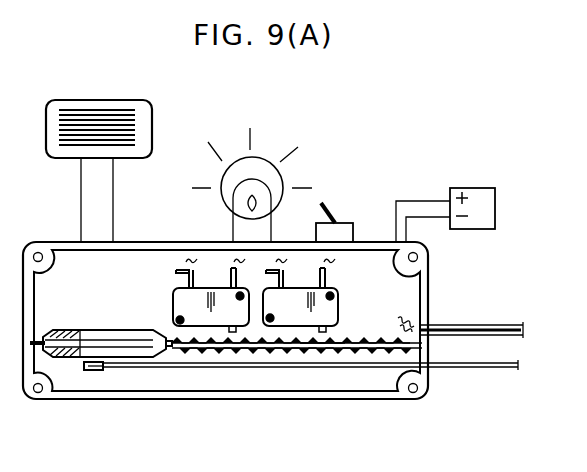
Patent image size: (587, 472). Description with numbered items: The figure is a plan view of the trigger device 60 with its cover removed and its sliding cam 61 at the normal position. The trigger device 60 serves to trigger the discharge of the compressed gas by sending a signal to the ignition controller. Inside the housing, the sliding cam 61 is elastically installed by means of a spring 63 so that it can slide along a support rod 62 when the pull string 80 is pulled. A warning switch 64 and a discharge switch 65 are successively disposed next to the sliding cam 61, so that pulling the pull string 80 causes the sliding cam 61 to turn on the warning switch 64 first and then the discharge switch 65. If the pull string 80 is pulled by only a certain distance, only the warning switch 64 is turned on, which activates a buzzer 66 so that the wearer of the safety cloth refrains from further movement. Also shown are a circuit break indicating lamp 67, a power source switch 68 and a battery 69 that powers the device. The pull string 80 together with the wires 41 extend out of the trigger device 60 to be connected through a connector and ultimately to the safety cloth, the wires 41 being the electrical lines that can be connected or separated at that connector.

The trigger device 60 is at (65, 399).
The sliding cam 61 is at (137, 349).
The support rod 62 is at (262, 349).
The spring 63 is at (322, 349).
The warning switch 64 is at (178, 292).
The discharge switch 65 is at (340, 300).
The buzzer 66 is at (152, 117).
The circuit break indicating lamp 67 is at (256, 160).
The power source switch 68 is at (330, 208).
The battery 69 is at (494, 200).
The wires 41 is at (505, 322).
The pull string 80 is at (487, 368).